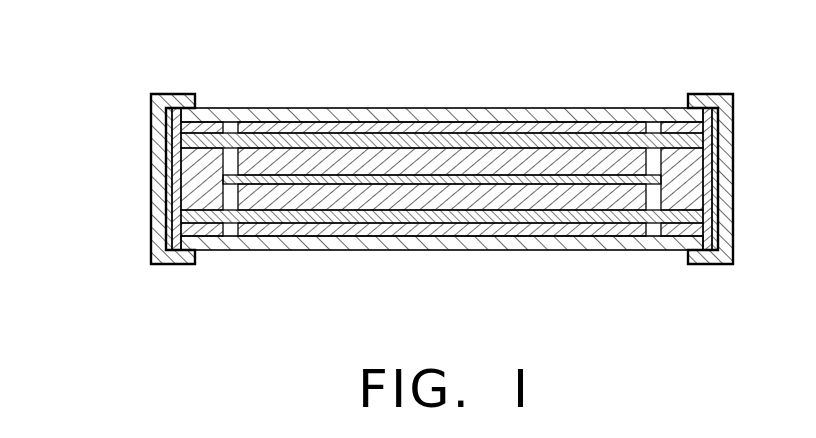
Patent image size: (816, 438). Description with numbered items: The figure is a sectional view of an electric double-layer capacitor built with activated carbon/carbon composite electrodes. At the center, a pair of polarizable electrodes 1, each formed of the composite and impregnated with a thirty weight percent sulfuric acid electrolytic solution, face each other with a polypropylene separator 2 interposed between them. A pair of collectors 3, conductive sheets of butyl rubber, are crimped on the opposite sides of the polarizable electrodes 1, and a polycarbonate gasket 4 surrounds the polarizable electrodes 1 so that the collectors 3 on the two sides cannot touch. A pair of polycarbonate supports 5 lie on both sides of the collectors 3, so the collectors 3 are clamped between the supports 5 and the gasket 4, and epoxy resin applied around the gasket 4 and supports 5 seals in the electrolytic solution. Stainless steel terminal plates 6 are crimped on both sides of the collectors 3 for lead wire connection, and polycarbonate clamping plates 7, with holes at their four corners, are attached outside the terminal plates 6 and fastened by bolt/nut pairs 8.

The polarizable electrode 1 is at (287, 165).
The polypropylene separator 2 is at (343, 178).
The collector 3 is at (395, 145).
The polycarbonate gasket 4 is at (158, 187).
The polycarbonate support 5 is at (158, 137).
The terminal plate 6 is at (468, 130).
The polycarbonate clamping plate 7 is at (531, 117).
The bolt/nut pair 8 is at (710, 103).